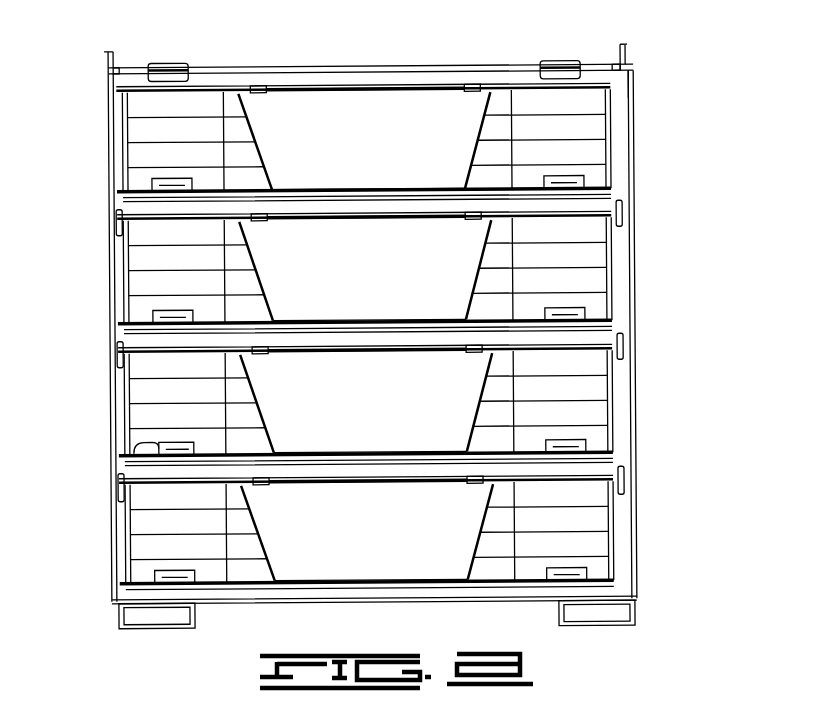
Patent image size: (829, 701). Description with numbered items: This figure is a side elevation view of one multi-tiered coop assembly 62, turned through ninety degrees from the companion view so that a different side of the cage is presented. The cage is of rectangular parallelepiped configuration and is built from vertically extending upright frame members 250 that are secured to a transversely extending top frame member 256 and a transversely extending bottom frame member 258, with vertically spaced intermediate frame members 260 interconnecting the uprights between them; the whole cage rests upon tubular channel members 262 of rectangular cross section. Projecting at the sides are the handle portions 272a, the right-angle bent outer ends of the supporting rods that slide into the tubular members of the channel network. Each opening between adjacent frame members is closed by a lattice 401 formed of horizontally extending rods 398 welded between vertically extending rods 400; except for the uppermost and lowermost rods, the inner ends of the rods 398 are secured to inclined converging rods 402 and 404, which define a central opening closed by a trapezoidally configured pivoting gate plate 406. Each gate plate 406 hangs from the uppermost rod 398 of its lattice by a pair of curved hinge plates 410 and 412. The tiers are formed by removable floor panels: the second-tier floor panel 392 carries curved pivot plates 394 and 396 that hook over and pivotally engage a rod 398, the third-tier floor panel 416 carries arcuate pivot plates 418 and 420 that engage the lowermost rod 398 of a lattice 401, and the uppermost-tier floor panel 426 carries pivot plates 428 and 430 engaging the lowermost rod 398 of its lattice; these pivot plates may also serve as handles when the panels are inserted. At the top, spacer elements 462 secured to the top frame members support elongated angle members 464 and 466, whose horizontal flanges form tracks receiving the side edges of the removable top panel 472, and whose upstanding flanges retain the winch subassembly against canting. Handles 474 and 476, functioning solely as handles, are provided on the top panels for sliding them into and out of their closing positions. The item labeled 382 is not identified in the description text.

The multi-tiered coop assembly 62 is at (648, 79).
The upright frame member 250 is at (113, 267).
The top frame member 256 is at (372, 72).
The bottom frame member 258 is at (413, 590).
The intermediate frame member 260 is at (157, 209).
The tubular channel member 262 is at (116, 612).
The handle portion 272a is at (117, 219).
The bottom shelf rail 382 is at (247, 586).
The floor panel 392 is at (384, 448).
The curved pivot plate 394 is at (131, 443).
The curved pivot plate 396 is at (603, 450).
The horizontally extending rod 398 is at (588, 112).
The vertically extending rod 400 is at (613, 536).
The lattice 401 is at (158, 118).
The inclined converging rod 402 is at (267, 168).
The inclined converging rod 404 is at (472, 156).
The pivoting gate plate 406 is at (352, 139).
The curved hinge plate 410 is at (263, 96).
The curved hinge plate 412 is at (476, 96).
The floor panel 416 is at (365, 310).
The curved pivot plate 418 is at (172, 317).
The curved pivot plate 420 is at (568, 312).
The floor panel 426 is at (325, 196).
The curved pivot plate 428 is at (153, 186).
The curved pivot plate 430 is at (567, 184).
The spacer element 462 is at (112, 71).
The elongated angle member 464 is at (111, 58).
The elongated angle member 466 is at (624, 48).
The removable top panel 472 is at (302, 66).
The handle 474 is at (166, 62).
The handle 476 is at (556, 62).